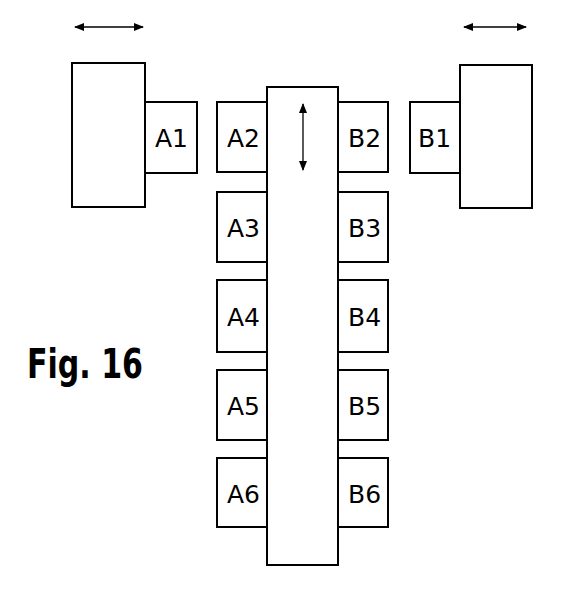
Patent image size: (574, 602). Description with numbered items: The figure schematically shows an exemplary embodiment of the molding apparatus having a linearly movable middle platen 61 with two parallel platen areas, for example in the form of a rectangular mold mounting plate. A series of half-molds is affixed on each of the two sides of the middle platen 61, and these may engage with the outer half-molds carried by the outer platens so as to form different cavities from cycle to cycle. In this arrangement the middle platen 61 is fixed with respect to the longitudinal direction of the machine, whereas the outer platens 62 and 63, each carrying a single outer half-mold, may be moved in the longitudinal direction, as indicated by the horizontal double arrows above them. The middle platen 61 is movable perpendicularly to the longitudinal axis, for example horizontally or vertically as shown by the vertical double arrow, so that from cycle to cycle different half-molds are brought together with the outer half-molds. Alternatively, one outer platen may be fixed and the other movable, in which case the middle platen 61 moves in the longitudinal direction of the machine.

The middle platen 61 is at (317, 103).
The outer platen 62 is at (113, 186).
The outer platen 63 is at (493, 191).